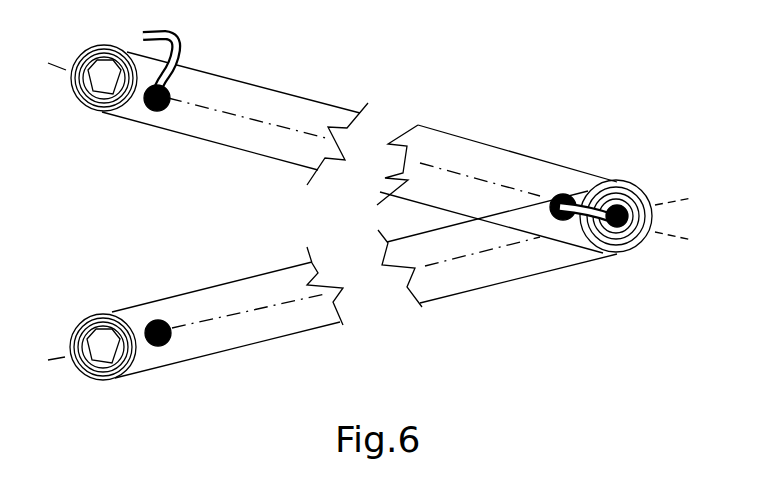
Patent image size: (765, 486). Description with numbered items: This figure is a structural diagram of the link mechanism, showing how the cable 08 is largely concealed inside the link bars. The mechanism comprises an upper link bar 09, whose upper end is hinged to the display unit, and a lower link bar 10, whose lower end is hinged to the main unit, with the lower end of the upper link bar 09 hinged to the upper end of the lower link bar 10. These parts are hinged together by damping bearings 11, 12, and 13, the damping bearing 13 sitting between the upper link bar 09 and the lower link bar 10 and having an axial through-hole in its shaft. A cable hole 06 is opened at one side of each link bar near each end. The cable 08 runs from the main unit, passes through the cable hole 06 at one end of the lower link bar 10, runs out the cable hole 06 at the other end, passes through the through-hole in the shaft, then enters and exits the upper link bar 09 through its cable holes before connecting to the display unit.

The cable hole 06 is at (167, 347).
The cable 08 is at (173, 57).
The upper link bar 09 is at (435, 128).
The lower link bar 10 is at (432, 298).
The damping bearing 11 is at (115, 115).
The damping bearing 12 is at (117, 307).
The damping bearing 13 is at (615, 262).